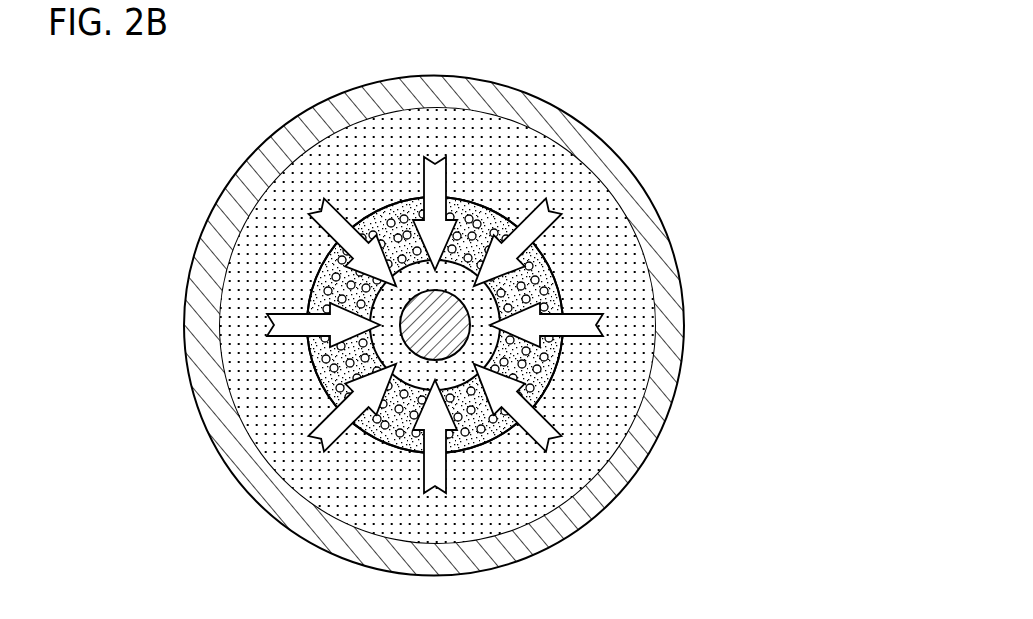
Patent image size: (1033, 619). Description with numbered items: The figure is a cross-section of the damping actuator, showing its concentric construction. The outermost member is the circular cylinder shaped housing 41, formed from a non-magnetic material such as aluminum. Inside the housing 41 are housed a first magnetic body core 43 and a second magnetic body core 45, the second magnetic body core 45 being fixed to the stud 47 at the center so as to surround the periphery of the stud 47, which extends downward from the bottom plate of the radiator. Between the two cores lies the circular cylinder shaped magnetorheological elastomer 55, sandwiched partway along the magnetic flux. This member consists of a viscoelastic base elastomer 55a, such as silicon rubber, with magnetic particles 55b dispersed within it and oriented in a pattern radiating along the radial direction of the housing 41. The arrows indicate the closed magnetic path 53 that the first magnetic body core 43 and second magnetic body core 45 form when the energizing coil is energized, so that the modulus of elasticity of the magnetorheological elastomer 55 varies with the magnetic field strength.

The housing 41 is at (290, 135).
The first magnetic body core 43 is at (605, 218).
The second magnetic body core 45 is at (555, 274).
The stud 47 is at (452, 302).
The closed magnetic path 53 is at (435, 172).
The magnetorheological elastomer 55 is at (555, 325).
The base elastomer 55a is at (550, 380).
The magnetic particles 55b is at (560, 348).